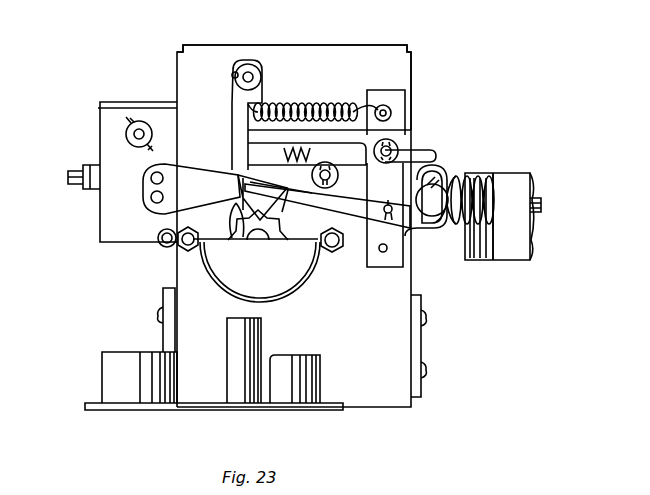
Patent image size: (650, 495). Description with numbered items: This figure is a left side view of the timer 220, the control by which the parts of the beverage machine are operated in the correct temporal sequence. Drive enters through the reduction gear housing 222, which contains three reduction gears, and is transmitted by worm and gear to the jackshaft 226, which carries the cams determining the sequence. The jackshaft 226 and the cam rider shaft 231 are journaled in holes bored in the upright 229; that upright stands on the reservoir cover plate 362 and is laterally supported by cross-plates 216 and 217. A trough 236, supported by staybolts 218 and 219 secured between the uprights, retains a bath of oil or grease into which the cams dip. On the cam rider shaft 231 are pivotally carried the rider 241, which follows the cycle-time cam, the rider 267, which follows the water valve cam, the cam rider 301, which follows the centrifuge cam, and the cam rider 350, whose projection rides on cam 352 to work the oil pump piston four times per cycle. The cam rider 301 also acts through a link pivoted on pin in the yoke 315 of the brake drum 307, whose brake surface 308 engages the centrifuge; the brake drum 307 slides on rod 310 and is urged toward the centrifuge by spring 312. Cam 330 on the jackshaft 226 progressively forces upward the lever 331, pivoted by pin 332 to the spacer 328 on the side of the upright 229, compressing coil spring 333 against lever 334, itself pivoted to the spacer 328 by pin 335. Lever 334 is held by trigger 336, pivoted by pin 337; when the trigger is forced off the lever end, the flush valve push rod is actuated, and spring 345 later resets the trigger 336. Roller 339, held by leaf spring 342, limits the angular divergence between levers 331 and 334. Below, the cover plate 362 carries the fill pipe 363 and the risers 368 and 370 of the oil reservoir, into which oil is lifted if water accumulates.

The timer 220 is at (418, 52).
The reduction gear housing 222 is at (110, 132).
The upright 229 is at (341, 57).
The rider 241 is at (148, 171).
The cam rider 301 is at (152, 216).
The rider 267 is at (156, 243).
The staybolt 218 is at (176, 249).
The staybolt 219 is at (328, 253).
The trough 236 is at (228, 270).
The cross-plate 216 is at (163, 332).
The cross-plate 217 is at (415, 351).
The riser 368 is at (113, 378).
The reservoir cover plate 362 is at (266, 408).
The fill pipe 363 is at (258, 322).
The riser 370 is at (321, 357).
The cam 330 is at (216, 243).
The cam 352 is at (233, 224).
The cam rider 350 is at (226, 178).
The coil spring 333 is at (286, 155).
The trigger 336 is at (237, 98).
The pin 337 is at (250, 73).
The spring 345 is at (327, 101).
The spacer 328 is at (385, 100).
The pin 335 is at (394, 141).
The lever 334 is at (430, 154).
The roller 339 is at (441, 167).
The leaf spring 342 is at (422, 233).
The yoke 315 is at (456, 245).
The spring 312 is at (487, 179).
The brake drum 307 is at (507, 254).
The brake surface 308 is at (531, 235).
The rod 310 is at (542, 201).
The pin 332 is at (395, 196).
The lever 331 is at (325, 201).
The cam rider shaft 231 is at (331, 170).
The jackshaft 226 is at (285, 213).